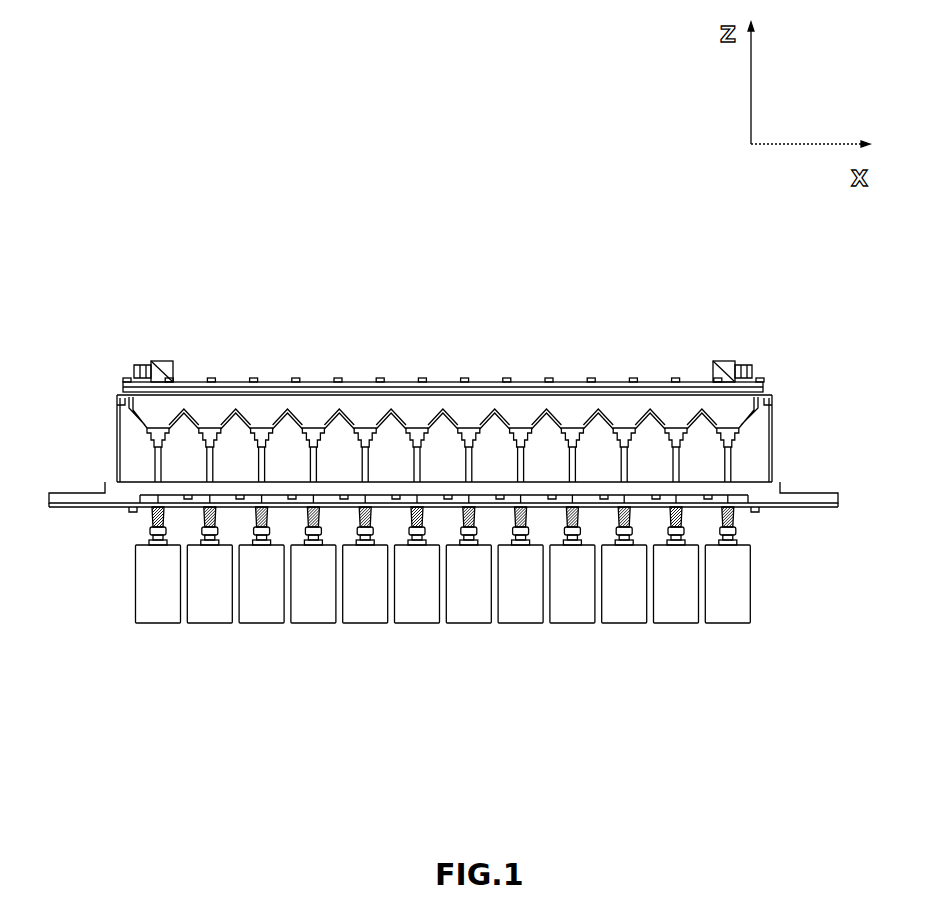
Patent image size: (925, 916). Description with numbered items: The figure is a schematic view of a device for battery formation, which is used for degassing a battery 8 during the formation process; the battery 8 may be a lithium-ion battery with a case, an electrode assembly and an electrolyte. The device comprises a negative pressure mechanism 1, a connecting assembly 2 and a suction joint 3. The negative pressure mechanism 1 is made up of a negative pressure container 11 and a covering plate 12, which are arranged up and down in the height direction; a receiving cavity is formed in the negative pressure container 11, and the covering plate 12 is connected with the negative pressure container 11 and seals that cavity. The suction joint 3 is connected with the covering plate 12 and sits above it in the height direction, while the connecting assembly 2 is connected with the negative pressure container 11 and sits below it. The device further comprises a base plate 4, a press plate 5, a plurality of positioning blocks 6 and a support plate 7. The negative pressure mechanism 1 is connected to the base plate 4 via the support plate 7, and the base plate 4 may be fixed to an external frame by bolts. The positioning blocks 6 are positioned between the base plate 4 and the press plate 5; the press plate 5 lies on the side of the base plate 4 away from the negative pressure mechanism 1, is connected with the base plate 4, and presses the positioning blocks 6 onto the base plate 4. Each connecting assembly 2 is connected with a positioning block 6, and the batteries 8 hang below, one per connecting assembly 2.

The negative pressure mechanism 1 is at (486, 343).
The connecting assembly 2 is at (143, 526).
The suction joint 3 is at (160, 376).
The base plate 4 is at (80, 491).
The press plate 5 is at (126, 508).
The positioning block 6 is at (158, 495).
The support plate 7 is at (117, 398).
The battery 8 is at (154, 623).
The negative pressure container 11 is at (147, 413).
The covering plate 12 is at (390, 382).